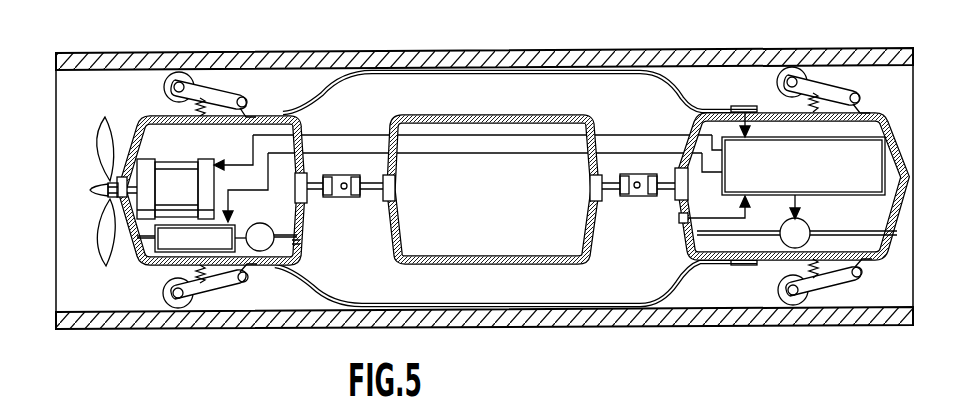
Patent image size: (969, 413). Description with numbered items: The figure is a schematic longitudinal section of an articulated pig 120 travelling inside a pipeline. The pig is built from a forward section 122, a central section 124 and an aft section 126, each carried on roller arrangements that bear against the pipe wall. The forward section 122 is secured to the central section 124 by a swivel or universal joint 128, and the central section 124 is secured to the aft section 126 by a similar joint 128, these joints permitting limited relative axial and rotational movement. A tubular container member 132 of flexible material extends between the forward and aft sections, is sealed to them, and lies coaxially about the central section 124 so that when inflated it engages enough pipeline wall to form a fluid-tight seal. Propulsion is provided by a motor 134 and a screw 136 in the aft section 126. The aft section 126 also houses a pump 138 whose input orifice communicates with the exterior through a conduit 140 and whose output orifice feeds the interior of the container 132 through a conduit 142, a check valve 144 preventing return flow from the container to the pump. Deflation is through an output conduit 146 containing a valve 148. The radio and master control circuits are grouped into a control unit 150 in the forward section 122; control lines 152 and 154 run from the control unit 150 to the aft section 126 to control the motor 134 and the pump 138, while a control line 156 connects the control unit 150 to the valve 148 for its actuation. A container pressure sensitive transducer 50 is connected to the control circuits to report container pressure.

The articulated pig 120 is at (698, 86).
The forward section 122 is at (690, 112).
The central section 124 is at (507, 116).
The aft section 126 is at (149, 118).
The swivel or universal joint 128 is at (353, 200).
The tubular container member 132 is at (592, 304).
The motor 134 is at (176, 160).
The screw 136 is at (100, 132).
The pump 138 is at (232, 222).
The conduit 140 is at (138, 258).
The conduit 142 is at (296, 242).
The check valve 144 is at (299, 221).
The conduit 146 is at (878, 224).
The valve 148 is at (777, 248).
The control unit 150 is at (762, 136).
The control line 152 is at (457, 137).
The control line 154 is at (533, 155).
The control line 156 is at (800, 212).
The container pressure sensitive transducer 50 is at (682, 220).